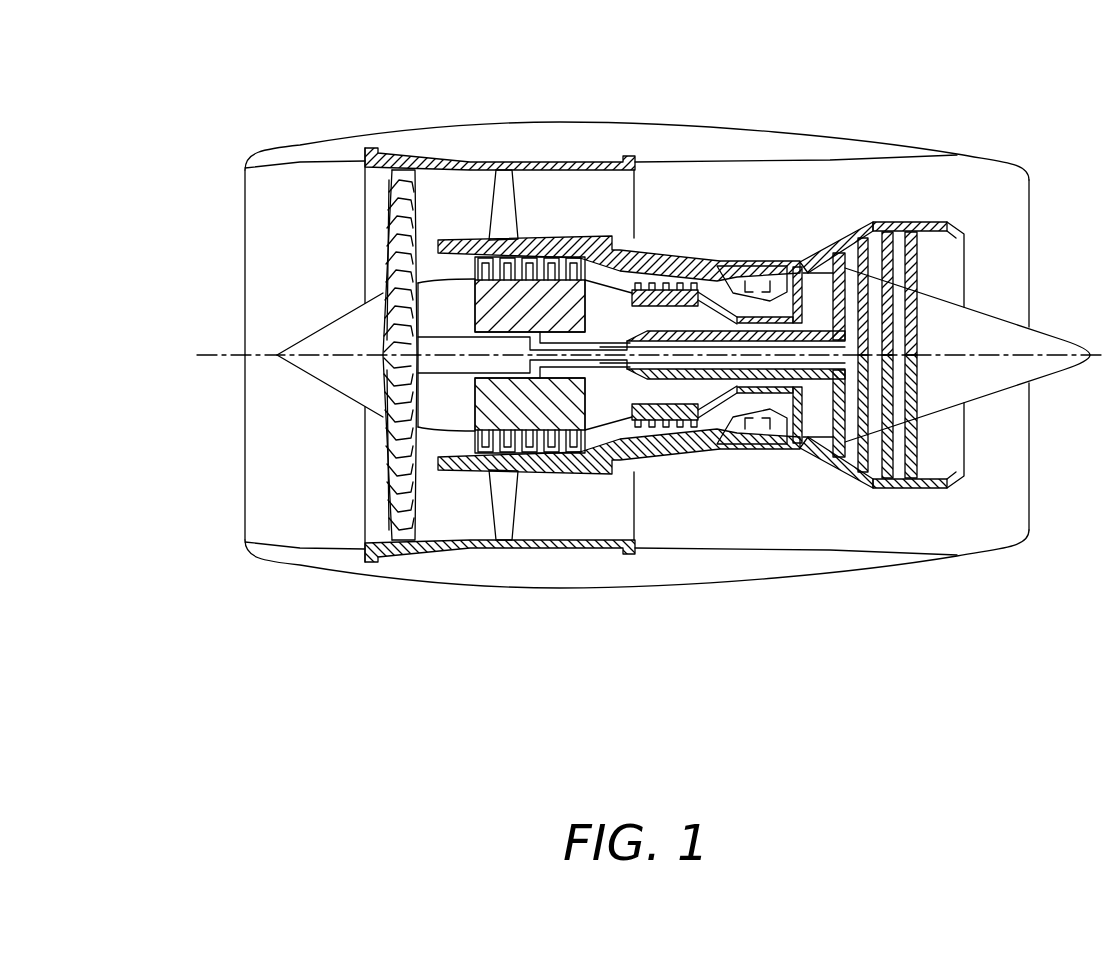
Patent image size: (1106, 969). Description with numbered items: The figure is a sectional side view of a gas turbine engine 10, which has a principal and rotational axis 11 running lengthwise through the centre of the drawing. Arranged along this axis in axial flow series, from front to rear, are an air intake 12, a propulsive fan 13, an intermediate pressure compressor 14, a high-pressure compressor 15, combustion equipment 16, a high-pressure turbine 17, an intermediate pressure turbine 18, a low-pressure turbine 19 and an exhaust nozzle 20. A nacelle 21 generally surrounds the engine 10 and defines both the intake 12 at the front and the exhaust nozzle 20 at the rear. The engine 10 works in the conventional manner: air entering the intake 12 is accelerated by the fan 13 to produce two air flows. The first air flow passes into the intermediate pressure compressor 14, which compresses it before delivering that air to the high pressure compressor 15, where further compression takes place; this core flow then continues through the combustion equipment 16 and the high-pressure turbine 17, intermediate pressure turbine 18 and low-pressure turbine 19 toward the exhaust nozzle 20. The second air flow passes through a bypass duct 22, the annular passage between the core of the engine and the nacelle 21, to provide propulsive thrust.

The gas turbine engine 10 is at (203, 219).
The principal and rotational axis 11 is at (223, 352).
The air intake 12 is at (319, 162).
The propulsive fan 13 is at (387, 485).
The intermediate pressure compressor 14 is at (532, 476).
The high-pressure compressor 15 is at (660, 283).
The combustion equipment 16 is at (753, 423).
The high-pressure turbine 17 is at (800, 423).
The intermediate pressure turbine 18 is at (835, 258).
The low-pressure turbine 19 is at (863, 457).
The exhaust nozzle 20 is at (1029, 516).
The nacelle 21 is at (845, 133).
The bypass duct 22 is at (580, 217).